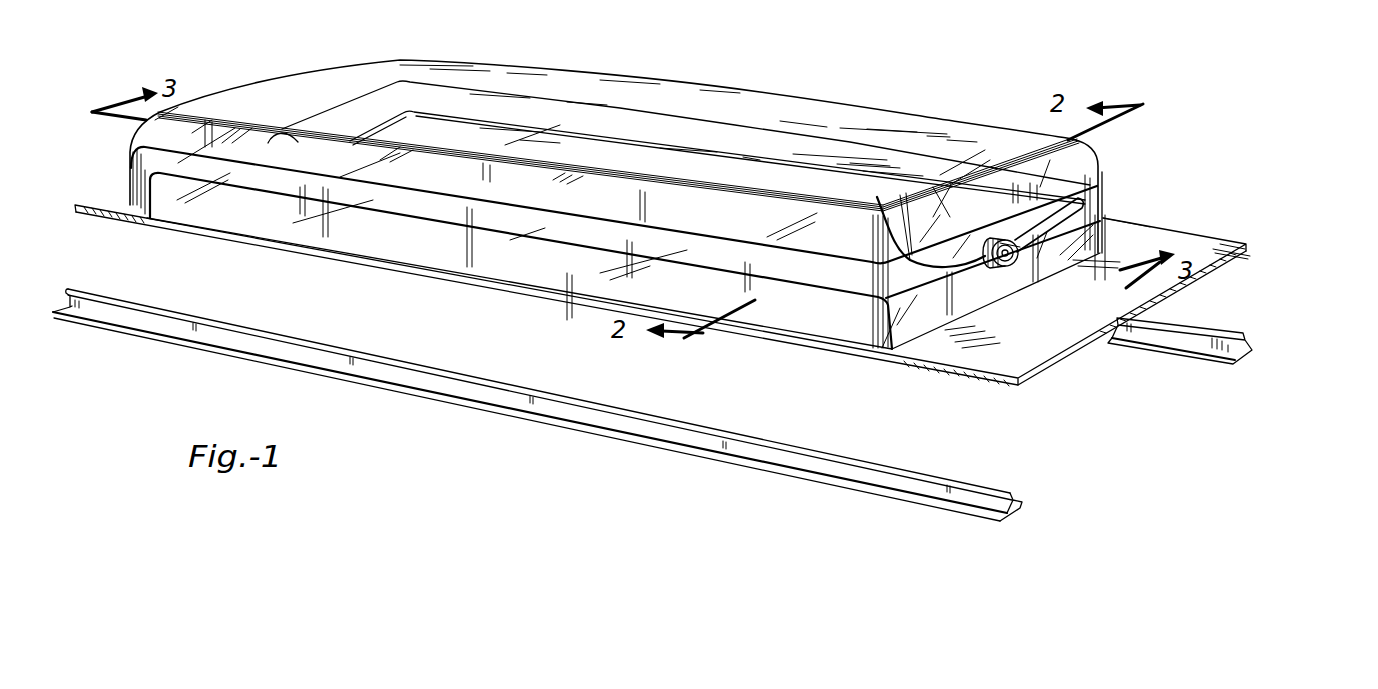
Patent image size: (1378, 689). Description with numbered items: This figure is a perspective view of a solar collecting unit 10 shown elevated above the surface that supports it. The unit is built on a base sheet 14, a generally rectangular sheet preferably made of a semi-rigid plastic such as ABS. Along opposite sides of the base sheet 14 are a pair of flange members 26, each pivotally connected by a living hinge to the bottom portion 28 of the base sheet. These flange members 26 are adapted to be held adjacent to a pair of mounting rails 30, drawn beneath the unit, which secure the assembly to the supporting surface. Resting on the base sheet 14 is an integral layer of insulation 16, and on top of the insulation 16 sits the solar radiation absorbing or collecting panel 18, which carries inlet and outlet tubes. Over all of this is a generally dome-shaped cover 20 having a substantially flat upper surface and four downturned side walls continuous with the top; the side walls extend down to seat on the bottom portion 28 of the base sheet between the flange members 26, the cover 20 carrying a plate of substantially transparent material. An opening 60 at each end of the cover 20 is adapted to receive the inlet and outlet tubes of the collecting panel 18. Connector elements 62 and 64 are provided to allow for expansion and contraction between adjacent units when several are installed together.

The solar collecting unit 10 is at (884, 94).
The base sheet 14 is at (1233, 230).
The layer of insulation 16 is at (130, 199).
The solar radiation absorbing panel 18 is at (791, 290).
The dome-shaped cover 20 is at (678, 72).
The flange members 26 is at (1207, 237).
The bottom portion of the base sheet 28 is at (1047, 353).
The mounting rails 30 is at (1266, 305).
The opening 60 is at (915, 222).
The connector element 62 is at (1042, 255).
The connector element 64 is at (273, 108).